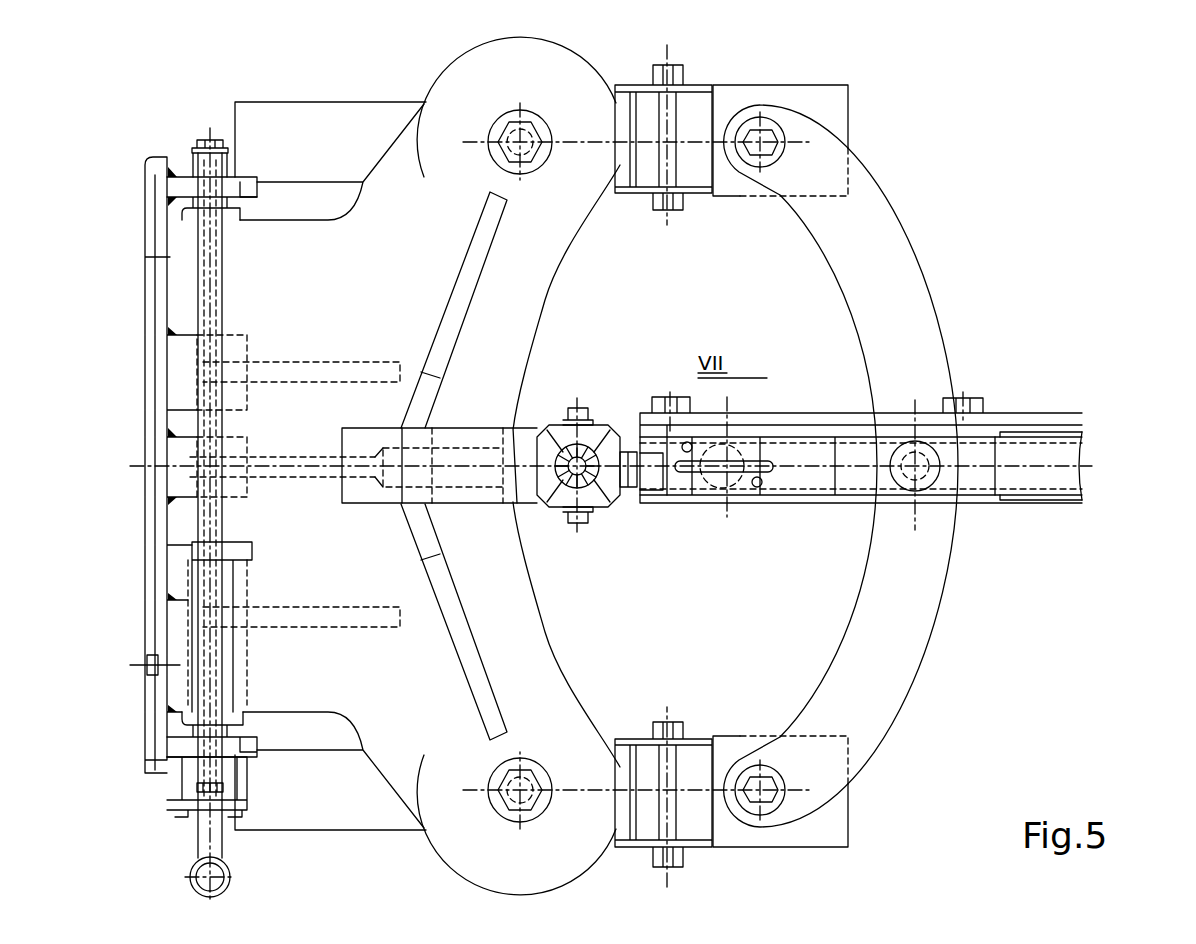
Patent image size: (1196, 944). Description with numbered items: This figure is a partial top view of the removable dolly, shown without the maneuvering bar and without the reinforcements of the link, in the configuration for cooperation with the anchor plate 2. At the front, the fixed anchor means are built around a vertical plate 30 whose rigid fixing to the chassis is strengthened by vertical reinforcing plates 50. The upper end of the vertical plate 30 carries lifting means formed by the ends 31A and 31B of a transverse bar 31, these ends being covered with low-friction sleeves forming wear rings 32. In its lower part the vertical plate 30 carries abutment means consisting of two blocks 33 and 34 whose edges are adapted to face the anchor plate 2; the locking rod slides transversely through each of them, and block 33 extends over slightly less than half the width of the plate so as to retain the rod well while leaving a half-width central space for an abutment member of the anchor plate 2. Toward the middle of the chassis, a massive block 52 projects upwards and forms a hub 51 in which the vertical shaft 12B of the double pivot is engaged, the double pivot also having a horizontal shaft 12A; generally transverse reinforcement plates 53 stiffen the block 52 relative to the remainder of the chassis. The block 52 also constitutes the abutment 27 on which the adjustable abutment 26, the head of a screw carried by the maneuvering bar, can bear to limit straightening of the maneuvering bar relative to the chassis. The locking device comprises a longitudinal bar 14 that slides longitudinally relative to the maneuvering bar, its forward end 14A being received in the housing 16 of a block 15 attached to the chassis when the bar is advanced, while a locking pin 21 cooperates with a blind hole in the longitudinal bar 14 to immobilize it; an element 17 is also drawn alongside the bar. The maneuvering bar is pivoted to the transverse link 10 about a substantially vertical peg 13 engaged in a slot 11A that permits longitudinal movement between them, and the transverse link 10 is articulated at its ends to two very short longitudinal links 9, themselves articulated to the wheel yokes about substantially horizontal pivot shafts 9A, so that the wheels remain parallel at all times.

The anchor plate 2 is at (152, 157).
The end of transverse bar 31A is at (200, 163).
The wear rings 32 is at (257, 203).
The transverse bar 31 is at (222, 249).
The vertical plate 30 is at (215, 282).
The block 34 is at (247, 342).
The vertical reinforcing plates 50 is at (375, 362).
The forward end of longitudinal bar 14A is at (392, 482).
The block 33 is at (248, 675).
The end of transverse bar 31B is at (207, 773).
The transverse reinforcement plates 53 is at (485, 263).
The block 15 is at (455, 440).
The massive block 52 is at (492, 428).
The housing 16 is at (458, 486).
The hub 51 is at (538, 492).
The vertical shaft 12B is at (558, 433).
The horizontal shaft 12A is at (590, 425).
The adjustable abutment 26 is at (625, 455).
The abutment 27 is at (612, 500).
The locking pin 21 is at (742, 475).
The peg 13 is at (900, 450).
The support bar 17 is at (1082, 418).
The longitudinal bar 14 is at (1082, 473).
The slot 11A is at (965, 478).
The transverse link 10 is at (887, 200).
The pivot shafts 9A is at (677, 113).
The longitudinal links 9 is at (823, 85).